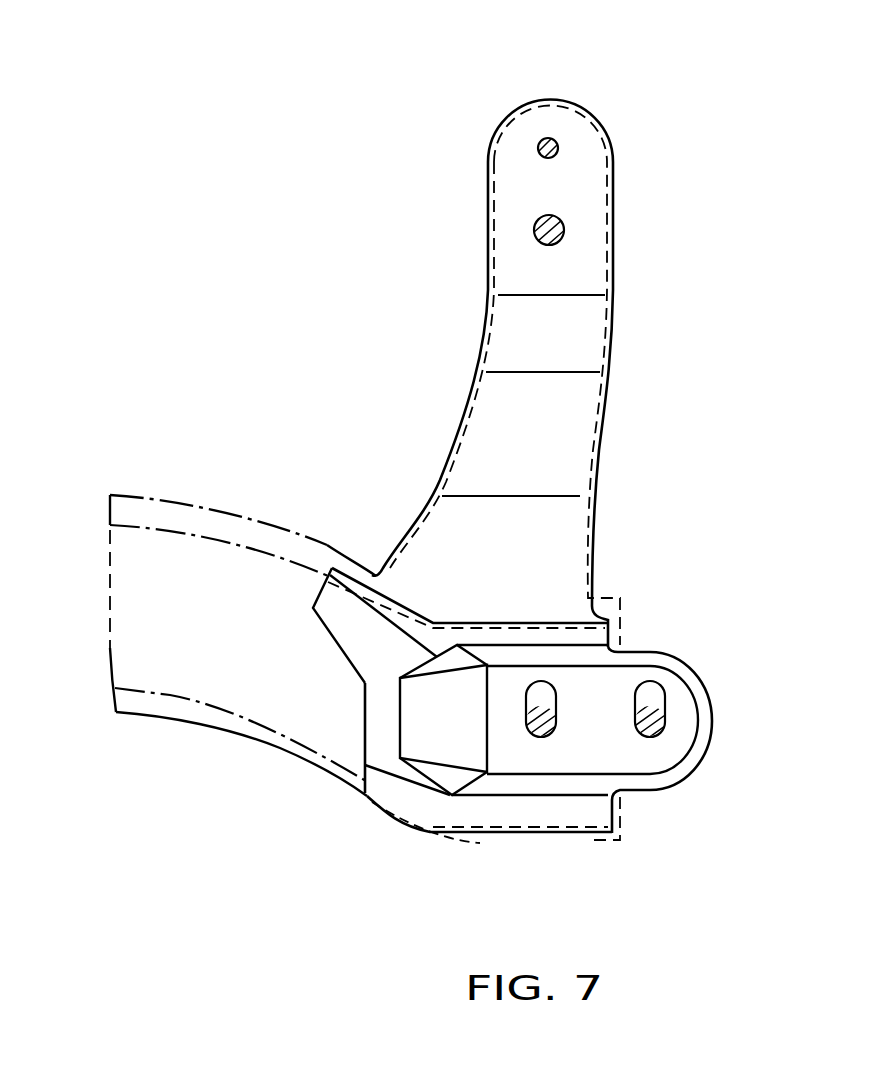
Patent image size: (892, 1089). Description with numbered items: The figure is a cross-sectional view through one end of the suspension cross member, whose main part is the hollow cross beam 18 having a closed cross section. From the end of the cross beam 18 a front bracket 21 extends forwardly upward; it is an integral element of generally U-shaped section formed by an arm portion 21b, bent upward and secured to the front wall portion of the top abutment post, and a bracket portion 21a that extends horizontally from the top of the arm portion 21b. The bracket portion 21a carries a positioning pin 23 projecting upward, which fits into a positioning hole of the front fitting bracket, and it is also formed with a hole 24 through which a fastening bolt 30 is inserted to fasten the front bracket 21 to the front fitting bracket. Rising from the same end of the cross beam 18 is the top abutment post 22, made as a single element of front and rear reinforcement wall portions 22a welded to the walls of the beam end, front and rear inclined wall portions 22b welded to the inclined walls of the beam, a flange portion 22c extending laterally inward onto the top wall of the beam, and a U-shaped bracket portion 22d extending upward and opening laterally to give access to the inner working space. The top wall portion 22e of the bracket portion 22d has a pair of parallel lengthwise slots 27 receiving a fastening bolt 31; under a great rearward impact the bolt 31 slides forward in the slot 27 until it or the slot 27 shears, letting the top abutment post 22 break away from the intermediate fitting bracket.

The cross beam 18 is at (186, 496).
The front bracket 21 is at (616, 360).
The bracket portion 21a is at (587, 170).
The arm portion 21b is at (582, 450).
The top abutment post 22 is at (645, 648).
The reinforcement wall portion 22a is at (513, 622).
The inclined wall portion 22b is at (380, 617).
The flange portion 22c is at (367, 676).
The bracket portion 22d is at (620, 794).
The top wall portion 22e is at (668, 747).
The positioning pin 23 is at (556, 138).
The hole 24 is at (562, 232).
The slot 27 is at (655, 688).
The fastening bolt 30 is at (538, 218).
The fastening bolt 31 is at (650, 738).